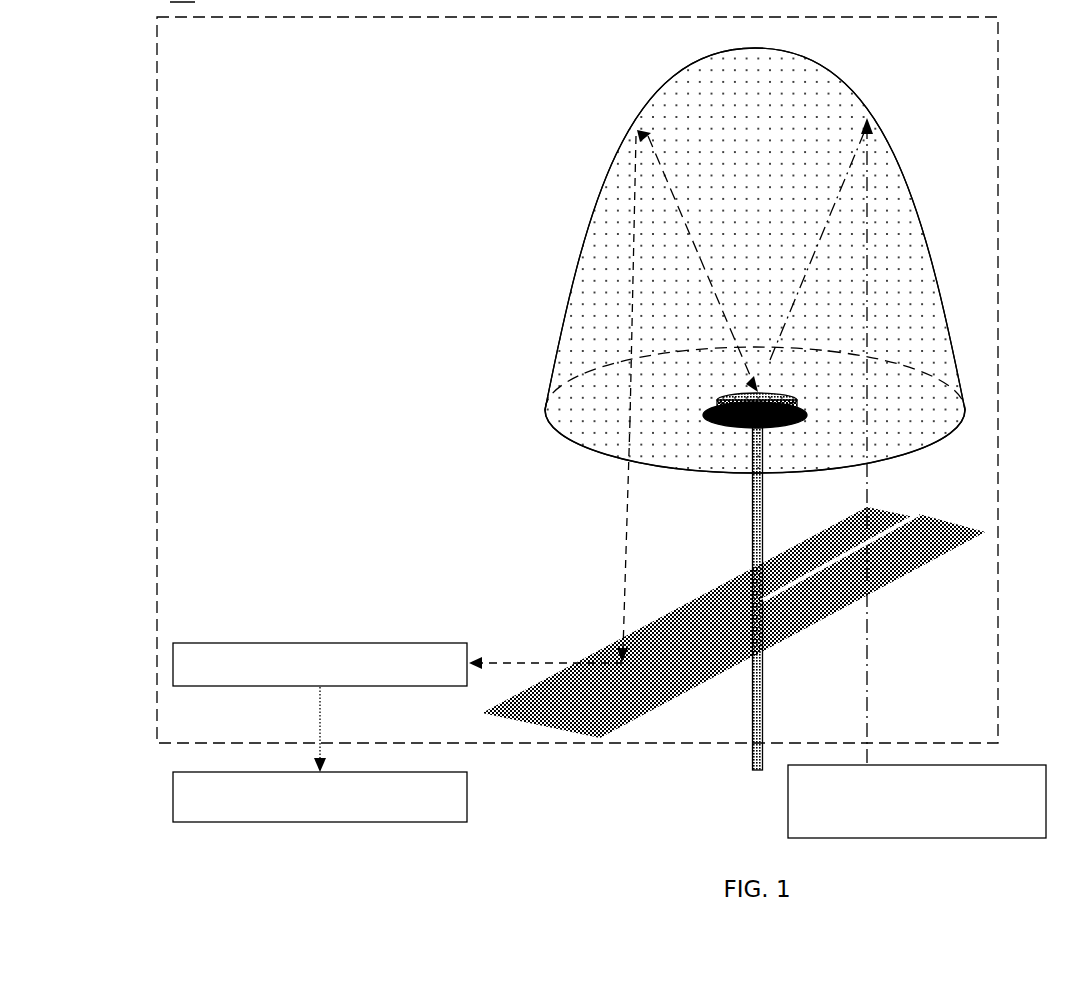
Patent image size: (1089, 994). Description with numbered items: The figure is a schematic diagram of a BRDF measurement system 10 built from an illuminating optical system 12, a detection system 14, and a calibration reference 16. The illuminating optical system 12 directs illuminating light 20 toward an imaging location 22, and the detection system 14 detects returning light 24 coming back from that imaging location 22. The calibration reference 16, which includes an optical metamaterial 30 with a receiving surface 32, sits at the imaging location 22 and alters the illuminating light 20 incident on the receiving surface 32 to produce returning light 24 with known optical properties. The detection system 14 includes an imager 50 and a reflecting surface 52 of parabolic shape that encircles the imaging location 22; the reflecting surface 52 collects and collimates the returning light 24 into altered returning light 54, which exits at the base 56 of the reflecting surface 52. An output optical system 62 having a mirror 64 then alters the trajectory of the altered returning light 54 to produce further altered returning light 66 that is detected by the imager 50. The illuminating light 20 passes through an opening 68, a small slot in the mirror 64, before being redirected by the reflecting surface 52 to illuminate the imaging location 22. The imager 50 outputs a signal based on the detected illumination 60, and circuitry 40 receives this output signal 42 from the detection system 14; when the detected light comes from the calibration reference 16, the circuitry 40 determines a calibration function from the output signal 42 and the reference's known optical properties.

The BRDF measurement system 10 is at (182, 1).
The illuminating optical system 12 is at (917, 801).
The detection system 14 is at (432, 17).
The calibration reference 16 is at (790, 428).
The illuminating light 20 is at (867, 665).
The imaging location 22 is at (722, 423).
The returning light 24 is at (685, 230).
The optical metamaterial 30 is at (718, 396).
The receiving surface 32 is at (789, 394).
The circuitry 40 is at (320, 797).
The output signal 42 is at (318, 733).
The imager 50 is at (320, 664).
The reflecting surface 52 is at (587, 232).
The altered returning light 54 is at (633, 192).
The base 56 is at (597, 445).
The detected illumination 60 is at (490, 657).
The output optical system 62 is at (678, 635).
The mirror 64 is at (920, 543).
The further altered returning light 66 is at (548, 660).
The opening 68 is at (805, 578).